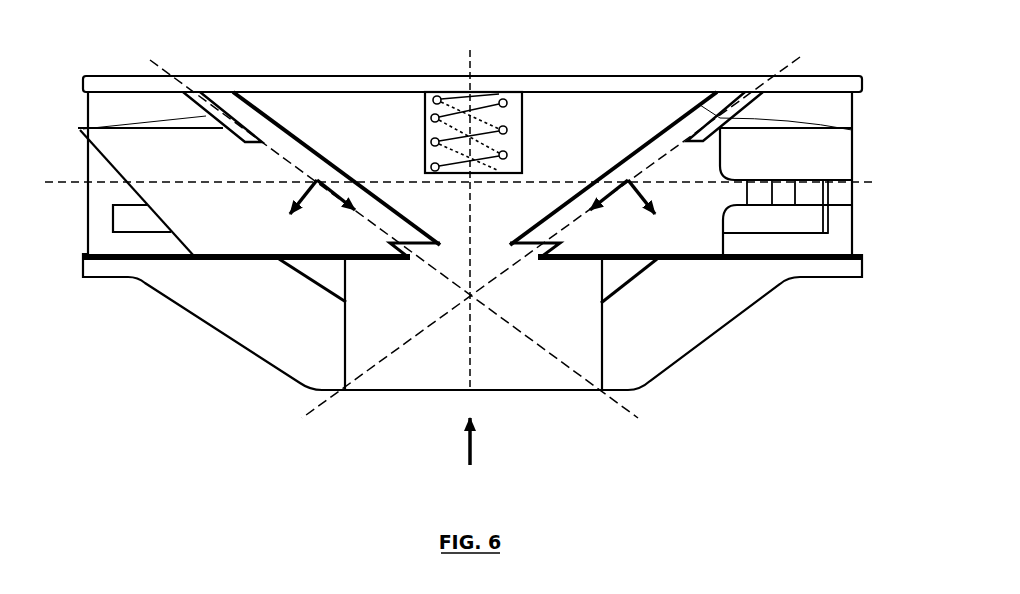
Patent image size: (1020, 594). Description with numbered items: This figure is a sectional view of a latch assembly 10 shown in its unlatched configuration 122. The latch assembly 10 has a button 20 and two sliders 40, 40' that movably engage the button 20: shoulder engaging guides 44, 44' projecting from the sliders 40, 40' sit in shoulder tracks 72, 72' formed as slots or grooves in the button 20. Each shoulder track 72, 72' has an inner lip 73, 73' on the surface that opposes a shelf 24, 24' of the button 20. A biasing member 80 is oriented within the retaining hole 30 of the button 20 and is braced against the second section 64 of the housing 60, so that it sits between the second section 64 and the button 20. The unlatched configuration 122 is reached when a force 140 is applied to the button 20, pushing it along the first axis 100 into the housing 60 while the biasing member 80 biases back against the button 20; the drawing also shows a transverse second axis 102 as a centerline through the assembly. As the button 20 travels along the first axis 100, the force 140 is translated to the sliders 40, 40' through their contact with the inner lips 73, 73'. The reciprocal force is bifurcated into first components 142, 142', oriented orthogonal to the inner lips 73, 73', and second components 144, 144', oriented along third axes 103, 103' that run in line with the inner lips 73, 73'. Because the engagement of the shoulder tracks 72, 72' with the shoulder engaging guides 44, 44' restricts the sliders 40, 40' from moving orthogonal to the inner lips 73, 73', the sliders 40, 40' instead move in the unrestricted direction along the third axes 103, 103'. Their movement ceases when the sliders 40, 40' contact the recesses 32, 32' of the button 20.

The latch assembly 10 is at (801, 412).
The unlatched configuration 122 is at (760, 386).
The button 20 is at (612, 351).
The shelf 24 is at (126, 133).
The shelf 24' is at (801, 128).
The retaining hole 30 is at (423, 120).
The recess 32 is at (312, 315).
The recess 32' is at (667, 306).
The slider 40 is at (150, 192).
The slider 40' is at (768, 192).
The shoulder engaging guide 44 is at (335, 133).
The shoulder engaging guide 44' is at (615, 134).
The housing 60 is at (184, 318).
The second section 64 is at (820, 89).
The shoulder track 72 is at (336, 145).
The shoulder track 72' is at (613, 149).
The inner lip 73 is at (243, 93).
The inner lip 73' is at (700, 88).
The biasing member 80 is at (481, 137).
The first axis 100 is at (470, 485).
The second axis 102 is at (484, 183).
The third axis 103 is at (372, 226).
The third axis 103' is at (566, 224).
The force 140 is at (447, 437).
The first component 142 is at (338, 210).
The first component 142' is at (603, 207).
The second component 144 is at (279, 202).
The second component 144' is at (664, 200).